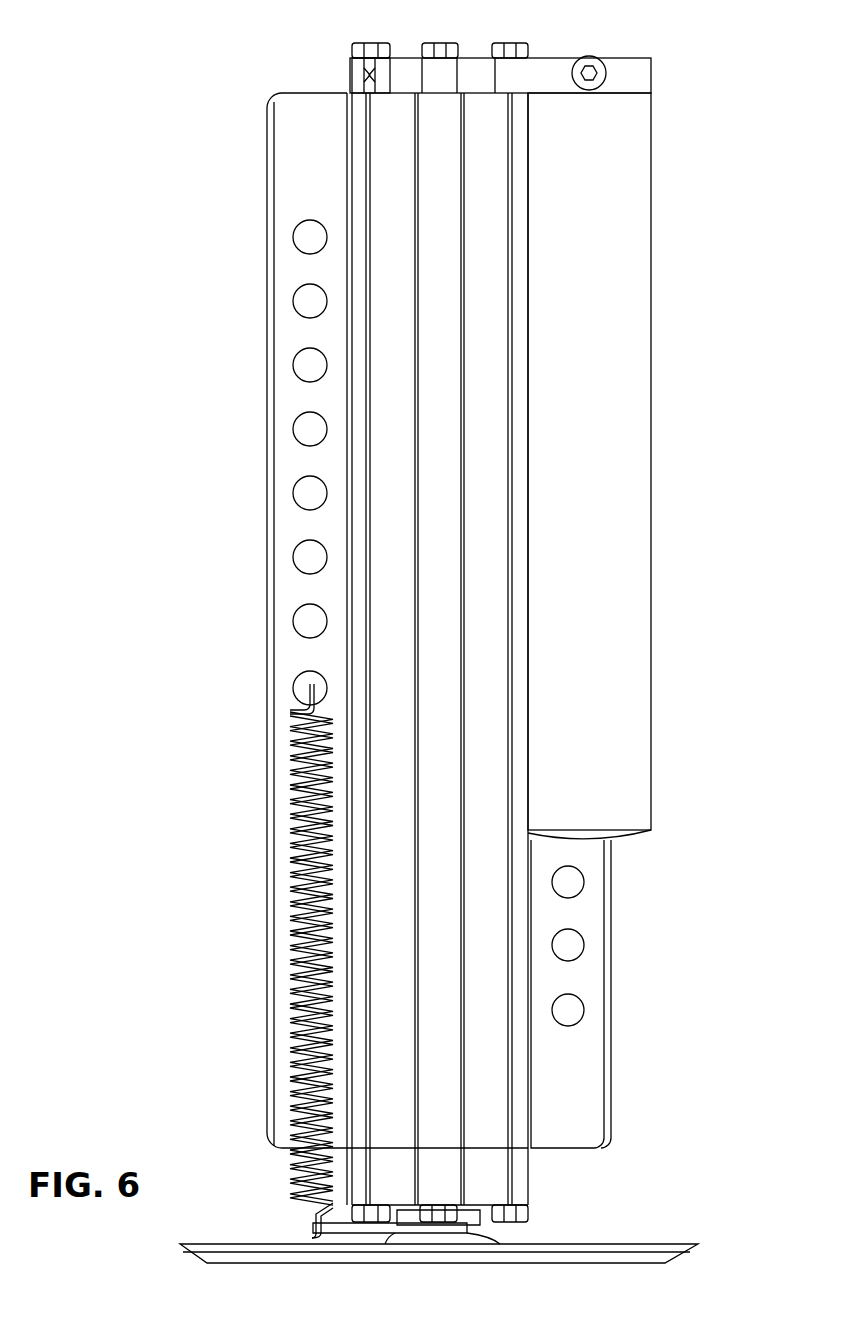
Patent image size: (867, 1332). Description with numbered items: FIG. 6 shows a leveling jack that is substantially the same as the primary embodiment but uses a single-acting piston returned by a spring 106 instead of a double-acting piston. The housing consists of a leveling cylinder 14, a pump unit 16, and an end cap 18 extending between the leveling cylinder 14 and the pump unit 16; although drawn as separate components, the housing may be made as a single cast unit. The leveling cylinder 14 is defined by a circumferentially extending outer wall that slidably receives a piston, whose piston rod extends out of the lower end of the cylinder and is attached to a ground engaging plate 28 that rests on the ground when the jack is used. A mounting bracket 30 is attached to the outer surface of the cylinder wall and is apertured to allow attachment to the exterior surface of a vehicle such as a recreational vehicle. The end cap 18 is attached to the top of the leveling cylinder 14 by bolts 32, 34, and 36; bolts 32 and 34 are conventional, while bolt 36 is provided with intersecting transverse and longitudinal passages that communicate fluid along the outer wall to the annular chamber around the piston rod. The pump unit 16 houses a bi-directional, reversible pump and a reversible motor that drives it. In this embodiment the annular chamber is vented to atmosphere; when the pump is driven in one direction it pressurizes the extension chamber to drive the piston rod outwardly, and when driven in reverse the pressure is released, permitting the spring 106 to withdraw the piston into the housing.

The leveling cylinder 14 is at (375, 554).
The pump unit 16 is at (630, 737).
The end cap 18 is at (636, 68).
The ground engaging plate 28 is at (657, 1253).
The mounting bracket 30 is at (590, 1080).
The bolt 32 is at (368, 52).
The bolt 34 is at (528, 50).
The bolt 36 is at (448, 50).
The spring 106 is at (295, 893).